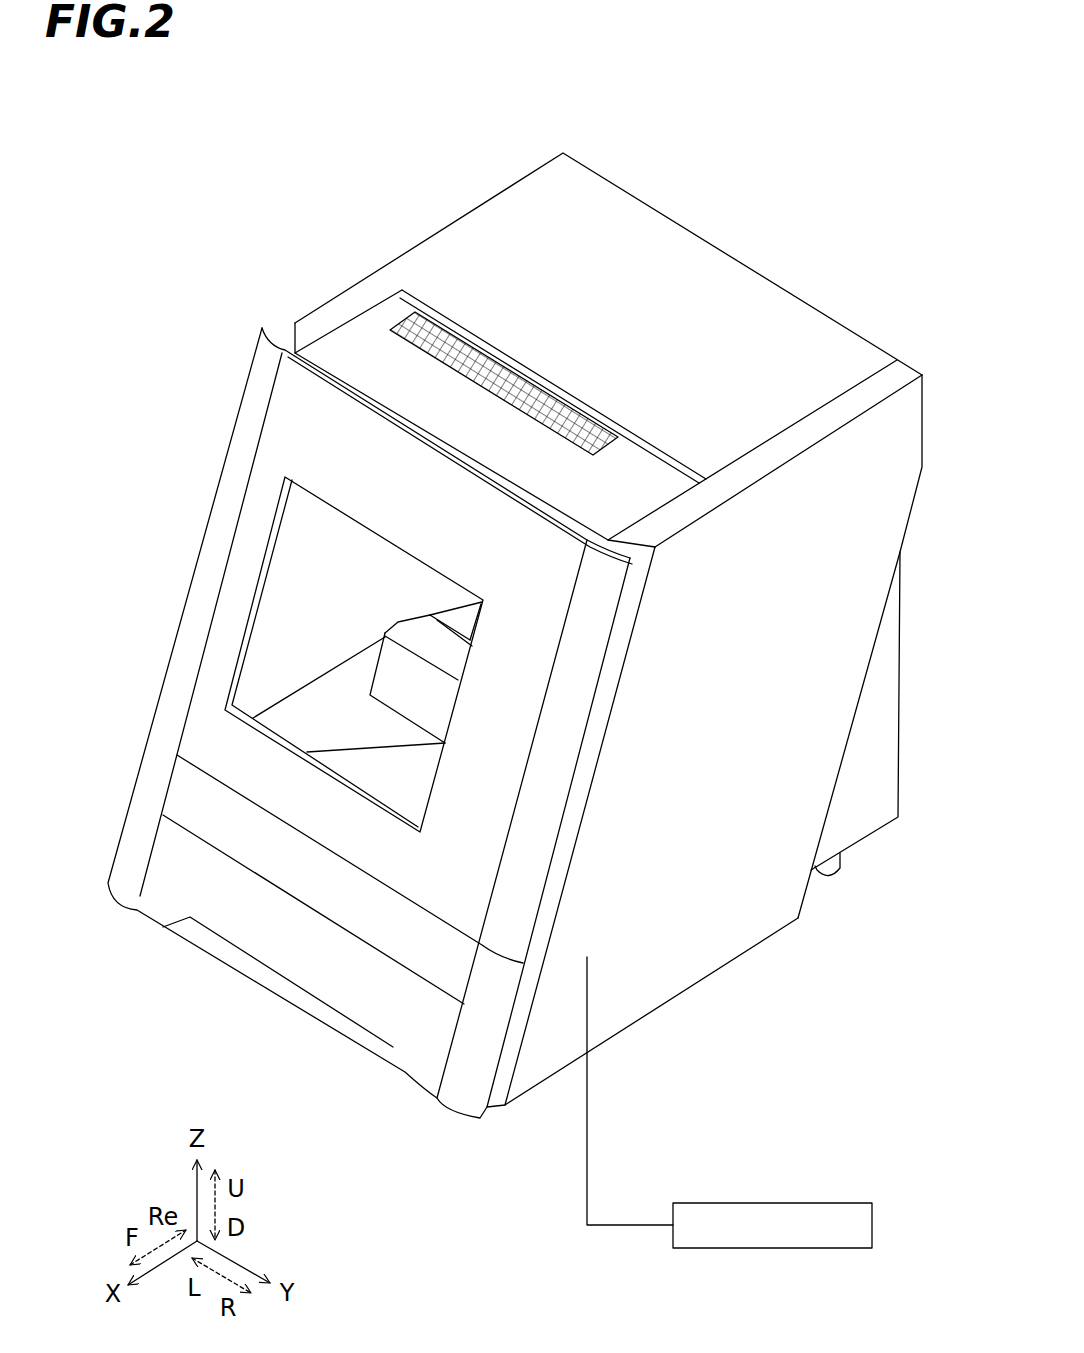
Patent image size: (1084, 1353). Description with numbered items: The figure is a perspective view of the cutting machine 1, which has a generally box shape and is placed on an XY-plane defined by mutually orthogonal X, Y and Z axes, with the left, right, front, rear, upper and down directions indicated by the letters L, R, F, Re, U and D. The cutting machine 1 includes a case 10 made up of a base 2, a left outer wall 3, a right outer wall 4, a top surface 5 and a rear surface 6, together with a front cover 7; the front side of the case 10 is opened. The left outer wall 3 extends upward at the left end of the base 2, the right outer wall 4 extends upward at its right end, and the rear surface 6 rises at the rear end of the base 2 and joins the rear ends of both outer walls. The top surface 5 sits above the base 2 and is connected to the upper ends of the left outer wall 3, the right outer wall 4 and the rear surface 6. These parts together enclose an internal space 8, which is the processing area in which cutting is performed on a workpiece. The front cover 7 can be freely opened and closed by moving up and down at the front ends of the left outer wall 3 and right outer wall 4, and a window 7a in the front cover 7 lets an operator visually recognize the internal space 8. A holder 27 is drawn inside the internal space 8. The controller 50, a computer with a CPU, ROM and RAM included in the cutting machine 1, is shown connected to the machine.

The cutting machine 1 is at (368, 141).
The base 2 is at (413, 787).
The left outer wall 3 is at (300, 535).
The right outer wall 4 is at (733, 920).
The top surface 5 is at (705, 260).
The rear surface 6 is at (813, 303).
The front cover 7 is at (213, 692).
The window 7a is at (260, 695).
The internal space 8 is at (330, 638).
The case 10 is at (626, 1036).
The holder 27 is at (430, 693).
The controller 50 is at (872, 1228).